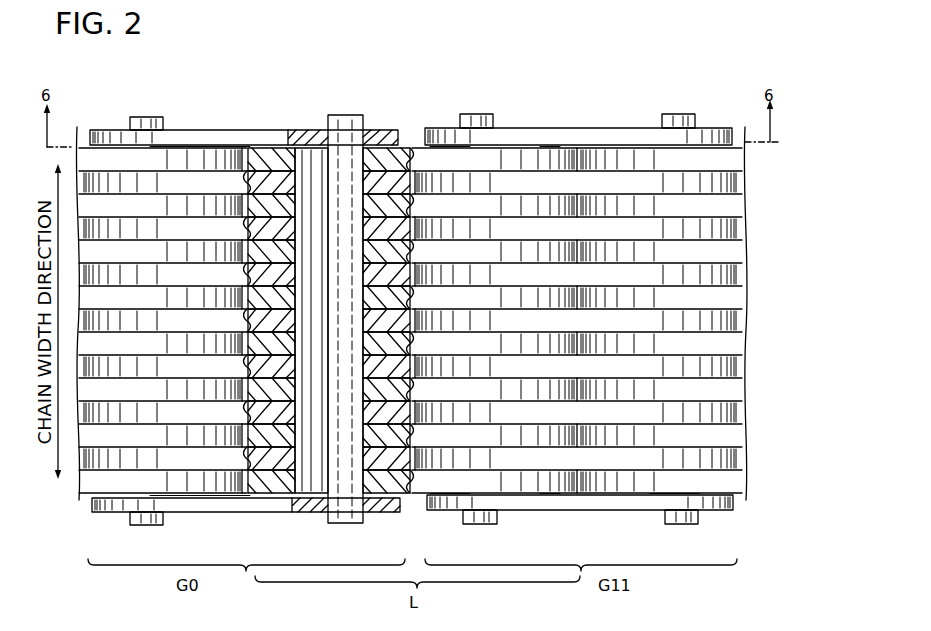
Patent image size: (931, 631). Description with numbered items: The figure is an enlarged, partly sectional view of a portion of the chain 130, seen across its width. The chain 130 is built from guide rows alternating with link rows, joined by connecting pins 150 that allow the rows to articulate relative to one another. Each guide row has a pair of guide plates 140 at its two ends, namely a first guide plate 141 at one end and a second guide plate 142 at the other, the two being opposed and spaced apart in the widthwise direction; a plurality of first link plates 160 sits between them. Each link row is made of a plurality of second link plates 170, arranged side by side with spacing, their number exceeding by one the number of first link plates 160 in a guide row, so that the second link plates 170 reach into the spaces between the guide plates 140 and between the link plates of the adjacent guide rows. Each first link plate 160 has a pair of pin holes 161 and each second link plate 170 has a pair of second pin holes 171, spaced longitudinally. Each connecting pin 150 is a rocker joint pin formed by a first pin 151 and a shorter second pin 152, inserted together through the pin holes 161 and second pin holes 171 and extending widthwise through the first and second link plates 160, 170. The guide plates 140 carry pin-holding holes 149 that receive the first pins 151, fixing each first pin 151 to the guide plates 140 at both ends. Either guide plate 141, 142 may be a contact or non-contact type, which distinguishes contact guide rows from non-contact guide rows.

The chain 130 is at (647, 78).
The guide plate 140 is at (411, 302).
The first guide plate 141 is at (203, 508).
The second guide plate 142 is at (222, 137).
The pin-holding hole 149 is at (364, 128).
The connecting pin 150 is at (324, 283).
The first pin 151 is at (340, 118).
The second pin 152 is at (306, 286).
The first link plate 160 is at (200, 232).
The pin hole 161 is at (277, 195).
The second link plate 170 is at (620, 155).
The second pin hole 171 is at (369, 485).